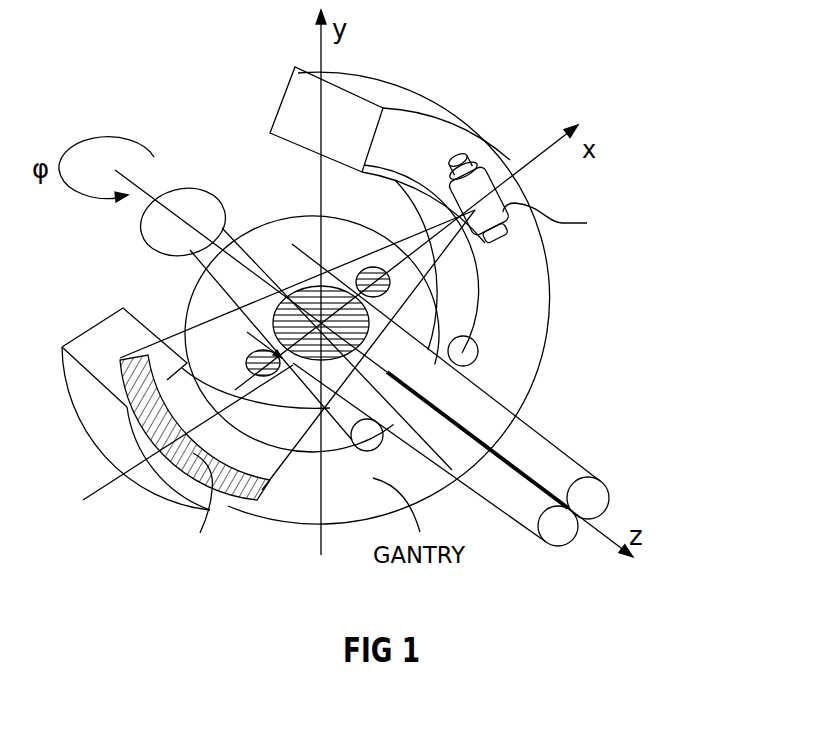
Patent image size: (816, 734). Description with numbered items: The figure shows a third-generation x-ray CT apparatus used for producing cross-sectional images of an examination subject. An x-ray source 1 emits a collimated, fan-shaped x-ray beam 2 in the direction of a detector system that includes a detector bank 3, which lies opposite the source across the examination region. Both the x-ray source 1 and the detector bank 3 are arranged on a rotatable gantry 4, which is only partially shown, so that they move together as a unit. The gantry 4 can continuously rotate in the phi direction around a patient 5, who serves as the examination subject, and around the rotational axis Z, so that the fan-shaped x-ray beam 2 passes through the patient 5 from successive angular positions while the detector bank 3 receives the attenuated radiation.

The x-ray source 1 is at (482, 198).
The fan-shaped x-ray beam 2 is at (413, 273).
The detector bank 3 is at (137, 362).
The rotatable gantry 4 is at (418, 133).
The patient 5 is at (290, 236).